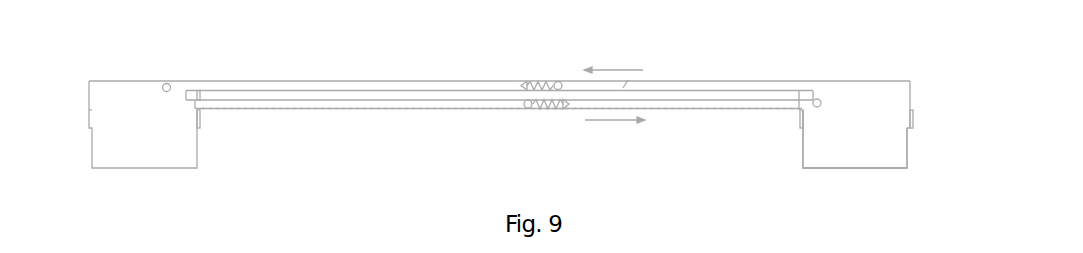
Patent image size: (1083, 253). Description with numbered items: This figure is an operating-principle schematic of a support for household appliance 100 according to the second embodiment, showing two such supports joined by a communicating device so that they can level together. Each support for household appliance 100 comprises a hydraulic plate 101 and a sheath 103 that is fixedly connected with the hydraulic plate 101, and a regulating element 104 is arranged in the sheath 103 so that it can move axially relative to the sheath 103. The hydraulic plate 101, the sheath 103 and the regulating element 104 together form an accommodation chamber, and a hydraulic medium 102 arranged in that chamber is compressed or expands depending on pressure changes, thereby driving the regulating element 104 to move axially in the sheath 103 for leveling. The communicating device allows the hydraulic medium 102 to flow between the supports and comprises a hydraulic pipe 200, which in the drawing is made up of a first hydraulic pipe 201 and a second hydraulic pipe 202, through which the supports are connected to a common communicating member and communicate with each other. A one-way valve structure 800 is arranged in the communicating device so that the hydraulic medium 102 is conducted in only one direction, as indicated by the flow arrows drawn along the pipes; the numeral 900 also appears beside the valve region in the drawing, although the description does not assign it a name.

The support for household appliance 100 is at (198, 128).
The hydraulic plate 101 is at (862, 81).
The hydraulic medium 102 is at (860, 128).
The sheath 103 is at (913, 122).
The regulating element 104 is at (907, 168).
The hydraulic pipe 200 is at (499, 55).
The first hydraulic pipe 201 is at (330, 90).
The second hydraulic pipe 202 is at (335, 33).
The one-way valve structure 800 is at (560, 82).
The spring 900 is at (528, 84).